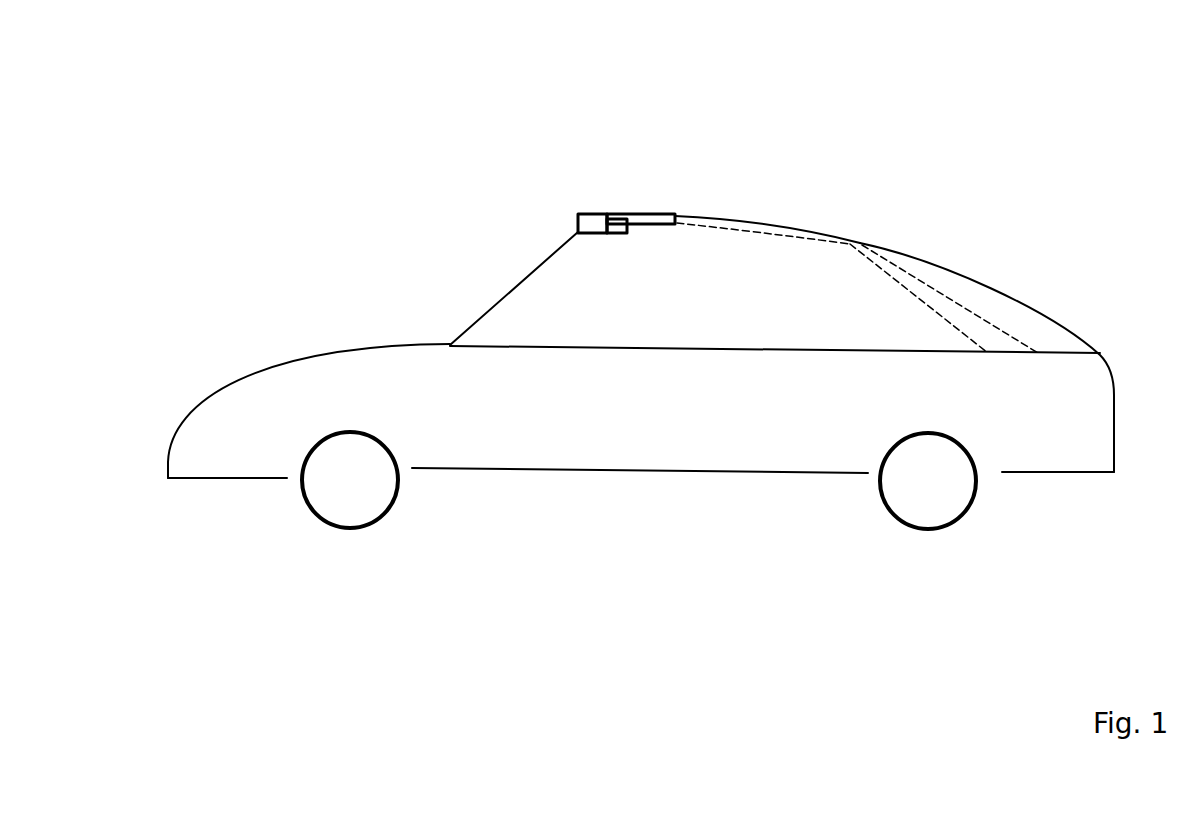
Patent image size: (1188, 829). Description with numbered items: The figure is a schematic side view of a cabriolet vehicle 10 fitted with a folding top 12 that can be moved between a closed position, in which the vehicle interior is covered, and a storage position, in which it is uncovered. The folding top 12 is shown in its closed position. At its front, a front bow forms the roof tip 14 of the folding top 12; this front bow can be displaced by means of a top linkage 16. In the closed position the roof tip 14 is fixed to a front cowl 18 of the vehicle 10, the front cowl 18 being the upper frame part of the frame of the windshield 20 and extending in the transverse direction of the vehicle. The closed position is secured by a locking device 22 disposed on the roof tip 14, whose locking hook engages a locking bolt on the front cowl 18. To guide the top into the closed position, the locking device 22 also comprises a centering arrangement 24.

The cabriolet vehicle 10 is at (641, 292).
The folding top 12 is at (800, 230).
The roof tip 14 is at (642, 218).
The top linkage 16 is at (932, 283).
The front cowl 18 is at (594, 227).
The windshield 20 is at (497, 300).
The locking device 22 is at (617, 223).
The centering arrangement 24 is at (617, 226).